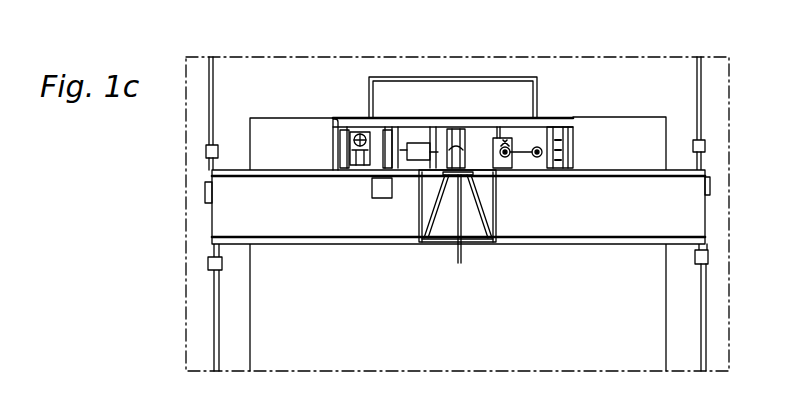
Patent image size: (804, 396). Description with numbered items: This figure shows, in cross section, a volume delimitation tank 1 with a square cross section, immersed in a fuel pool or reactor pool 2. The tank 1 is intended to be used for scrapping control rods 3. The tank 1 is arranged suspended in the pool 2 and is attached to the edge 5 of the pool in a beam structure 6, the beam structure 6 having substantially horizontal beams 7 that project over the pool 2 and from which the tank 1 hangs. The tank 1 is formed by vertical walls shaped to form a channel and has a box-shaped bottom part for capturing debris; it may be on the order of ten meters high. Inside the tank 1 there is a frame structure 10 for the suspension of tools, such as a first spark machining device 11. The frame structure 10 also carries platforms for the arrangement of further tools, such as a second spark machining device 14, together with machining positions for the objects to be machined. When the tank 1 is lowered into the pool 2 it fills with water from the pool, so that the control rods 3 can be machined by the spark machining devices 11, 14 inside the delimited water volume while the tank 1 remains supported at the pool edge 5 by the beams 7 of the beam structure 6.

The volume delimitation tank 1 is at (326, 150).
The fuel pool or reactor pool 2 is at (290, 323).
The control rods 3 is at (388, 155).
The edge of the pool 5 is at (647, 77).
The beam structure 6 is at (513, 77).
The horizontal beams 7 is at (225, 217).
The frame structure 10 is at (352, 150).
The first spark machining device 11 is at (525, 148).
The second spark machining device 14 is at (415, 147).